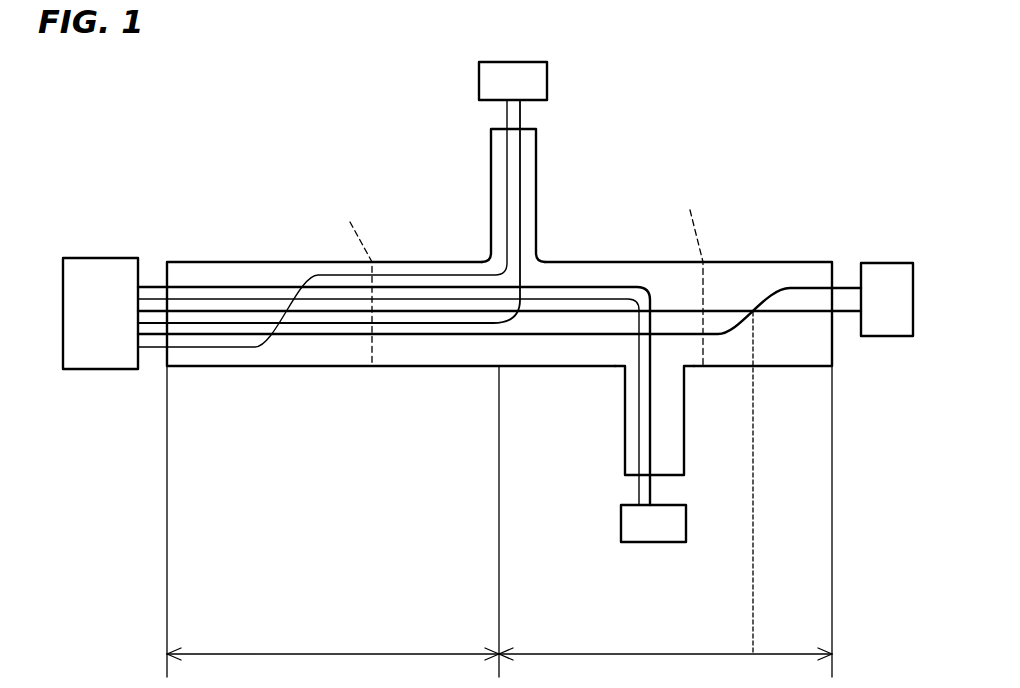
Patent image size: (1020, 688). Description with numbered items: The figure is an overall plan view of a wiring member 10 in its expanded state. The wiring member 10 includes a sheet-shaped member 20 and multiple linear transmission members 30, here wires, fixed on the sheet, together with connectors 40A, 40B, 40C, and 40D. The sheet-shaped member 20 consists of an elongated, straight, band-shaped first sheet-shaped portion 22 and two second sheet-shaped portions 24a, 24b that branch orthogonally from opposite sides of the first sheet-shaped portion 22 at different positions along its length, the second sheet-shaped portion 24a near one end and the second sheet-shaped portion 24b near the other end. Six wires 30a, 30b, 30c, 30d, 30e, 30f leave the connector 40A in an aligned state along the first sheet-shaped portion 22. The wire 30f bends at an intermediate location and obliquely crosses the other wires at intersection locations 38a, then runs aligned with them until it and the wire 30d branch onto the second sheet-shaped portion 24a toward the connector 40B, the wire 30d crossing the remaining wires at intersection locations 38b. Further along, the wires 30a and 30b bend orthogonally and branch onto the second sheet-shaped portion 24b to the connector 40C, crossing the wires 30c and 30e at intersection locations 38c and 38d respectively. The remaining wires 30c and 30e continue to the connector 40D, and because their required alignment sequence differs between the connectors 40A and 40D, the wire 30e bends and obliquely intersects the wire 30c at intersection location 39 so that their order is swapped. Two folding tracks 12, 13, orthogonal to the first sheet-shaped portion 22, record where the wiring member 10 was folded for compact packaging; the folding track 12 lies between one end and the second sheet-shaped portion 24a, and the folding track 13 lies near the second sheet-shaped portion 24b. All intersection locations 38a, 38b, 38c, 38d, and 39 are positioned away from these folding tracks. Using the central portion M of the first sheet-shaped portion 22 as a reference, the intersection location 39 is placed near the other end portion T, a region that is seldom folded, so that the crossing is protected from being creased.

The wiring member 10 is at (398, 123).
The folding track 12 is at (352, 281).
The folding track 13 is at (686, 275).
The sheet-shaped member 20 is at (402, 250).
The first sheet-shaped portion 22 is at (453, 262).
The second sheet-shaped portion 24a is at (490, 178).
The second sheet-shaped portion 24b is at (685, 400).
The linear transmission member 30 is at (156, 277).
The wire 30a is at (183, 292).
The wire 30b is at (228, 302).
The wire 30c is at (273, 312).
The wire 30d is at (183, 323).
The wire 30e is at (218, 337).
The wire 30f is at (243, 352).
The intersection location 38a is at (320, 283).
The intersection location 38b is at (523, 293).
The intersection location 38c is at (661, 336).
The intersection location 38d is at (642, 336).
The intersection location 39 is at (753, 312).
The connector 40A is at (88, 258).
The connector 40B is at (548, 85).
The connector 40C is at (688, 522).
The connector 40D is at (885, 336).
The central portion M is at (495, 366).
The end portion T is at (832, 358).